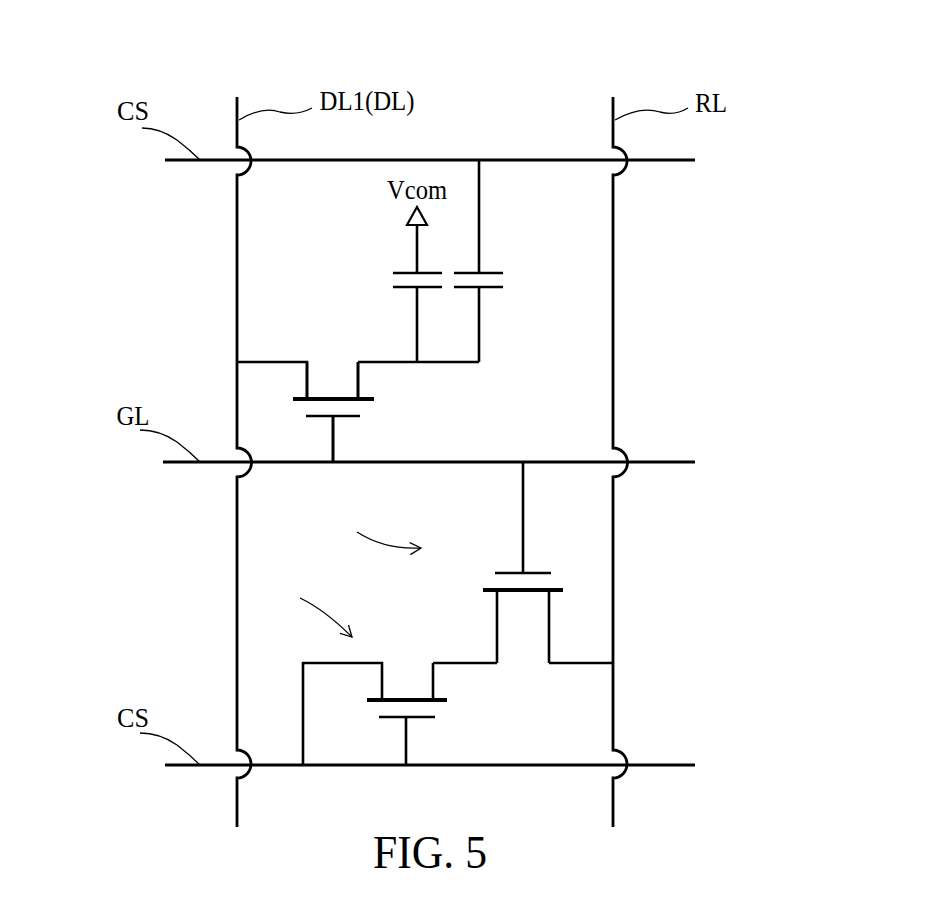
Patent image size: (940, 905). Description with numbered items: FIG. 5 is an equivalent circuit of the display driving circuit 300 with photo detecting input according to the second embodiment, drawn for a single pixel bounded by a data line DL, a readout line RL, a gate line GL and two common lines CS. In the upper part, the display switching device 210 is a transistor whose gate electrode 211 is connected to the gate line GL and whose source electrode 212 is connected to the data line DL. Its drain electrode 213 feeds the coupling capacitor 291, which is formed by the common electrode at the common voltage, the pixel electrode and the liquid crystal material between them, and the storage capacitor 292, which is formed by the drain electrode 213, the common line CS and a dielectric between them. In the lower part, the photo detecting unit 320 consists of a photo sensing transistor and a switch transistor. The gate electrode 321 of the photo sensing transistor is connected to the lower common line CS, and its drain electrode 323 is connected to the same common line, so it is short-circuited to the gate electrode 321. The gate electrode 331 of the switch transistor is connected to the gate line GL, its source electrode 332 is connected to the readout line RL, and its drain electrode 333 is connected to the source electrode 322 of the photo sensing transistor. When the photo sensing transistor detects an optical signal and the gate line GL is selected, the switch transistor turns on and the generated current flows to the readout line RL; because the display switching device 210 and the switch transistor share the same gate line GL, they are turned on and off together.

The display driving circuit 300 is at (793, 85).
The display switching device 210 is at (392, 386).
The gate electrode 211 is at (336, 436).
The source electrode 212 is at (303, 375).
The drain electrode 213 is at (358, 372).
The coupling capacitor 291 is at (385, 261).
The storage capacitor 292 is at (506, 261).
The photo detecting unit 320 is at (428, 613).
The gate electrode 321 is at (406, 740).
The source electrode 322 is at (437, 683).
The drain electrode 323 is at (383, 672).
The gate electrode 331 is at (523, 510).
The source electrode 332 is at (558, 605).
The drain electrode 333 is at (493, 600).